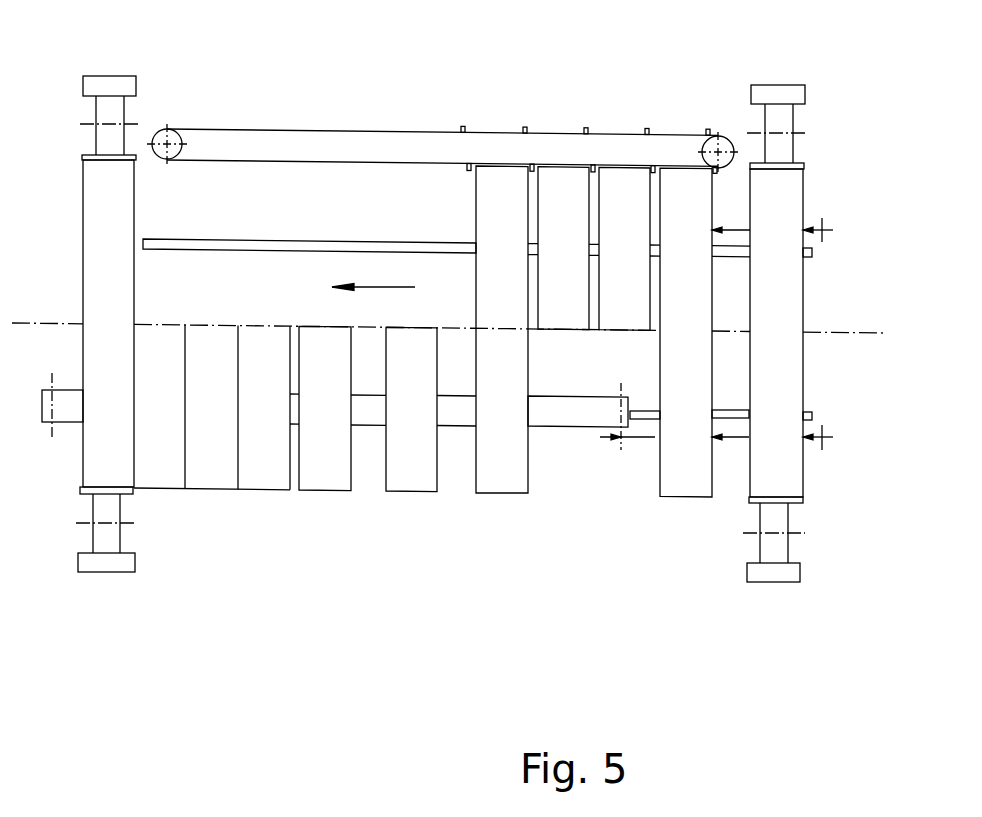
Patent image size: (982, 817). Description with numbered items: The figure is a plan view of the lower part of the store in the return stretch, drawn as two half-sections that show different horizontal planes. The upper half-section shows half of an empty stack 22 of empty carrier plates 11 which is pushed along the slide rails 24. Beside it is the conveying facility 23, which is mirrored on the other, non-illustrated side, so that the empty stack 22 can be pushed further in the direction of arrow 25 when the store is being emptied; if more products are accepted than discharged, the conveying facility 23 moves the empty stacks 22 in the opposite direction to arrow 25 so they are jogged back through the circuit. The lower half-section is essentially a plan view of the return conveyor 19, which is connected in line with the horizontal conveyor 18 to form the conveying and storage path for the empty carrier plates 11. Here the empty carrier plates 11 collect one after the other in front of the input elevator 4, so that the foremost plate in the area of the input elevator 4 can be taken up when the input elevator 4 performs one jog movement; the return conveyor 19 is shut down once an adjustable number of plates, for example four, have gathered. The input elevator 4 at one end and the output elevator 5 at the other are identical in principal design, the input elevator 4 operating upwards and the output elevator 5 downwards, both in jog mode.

The input elevator 4 is at (185, 555).
The output elevator 5 is at (830, 565).
The carrier plates 11 is at (269, 472).
The horizontal conveyor 18 is at (822, 240).
The return conveyor 19 is at (561, 417).
The empty stack 22 is at (623, 218).
The conveying facility 23 is at (663, 133).
The slide rails 24 is at (295, 248).
The arrow 25 is at (382, 287).